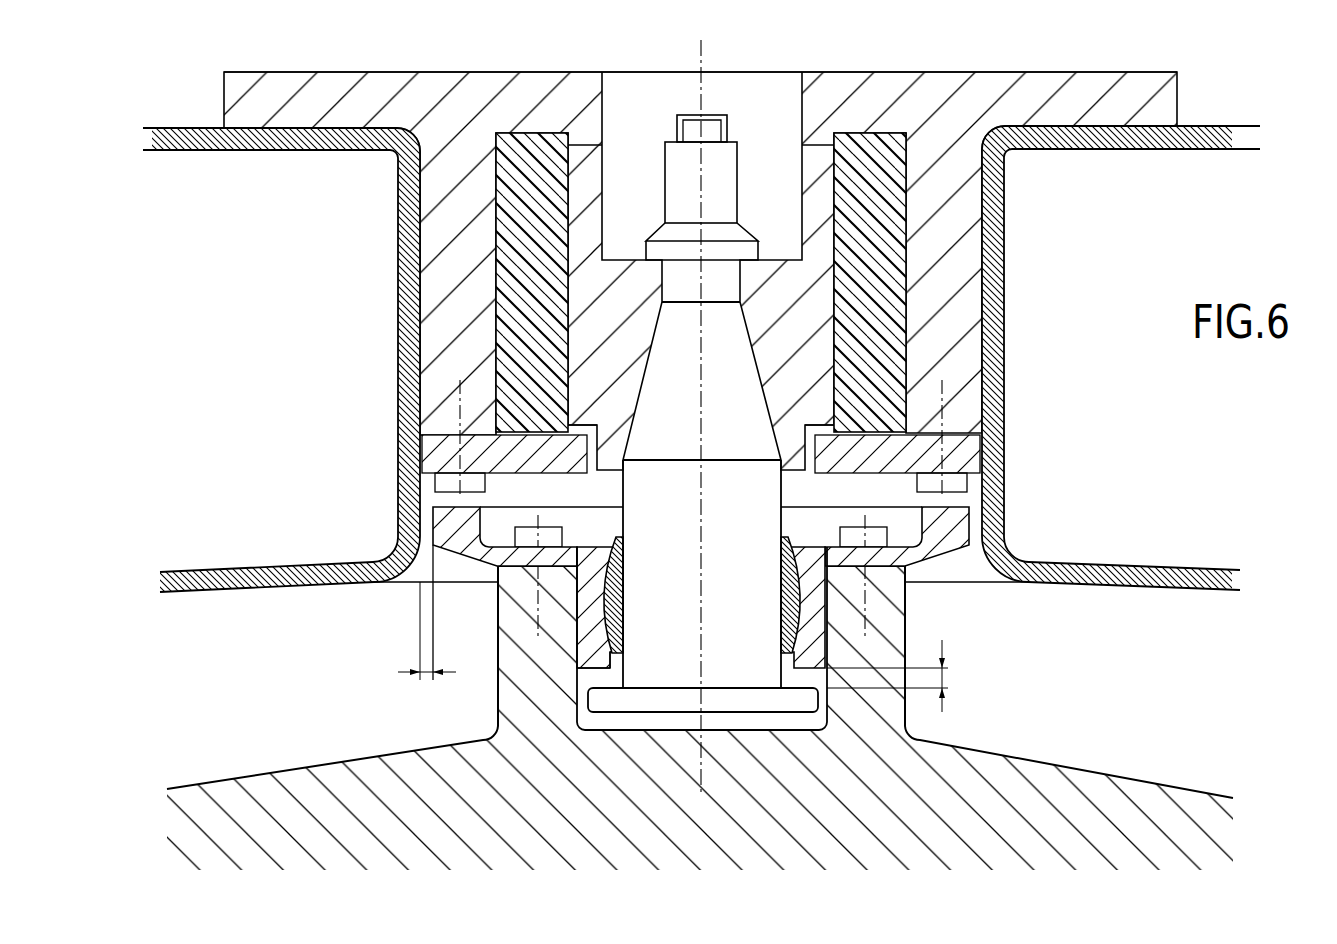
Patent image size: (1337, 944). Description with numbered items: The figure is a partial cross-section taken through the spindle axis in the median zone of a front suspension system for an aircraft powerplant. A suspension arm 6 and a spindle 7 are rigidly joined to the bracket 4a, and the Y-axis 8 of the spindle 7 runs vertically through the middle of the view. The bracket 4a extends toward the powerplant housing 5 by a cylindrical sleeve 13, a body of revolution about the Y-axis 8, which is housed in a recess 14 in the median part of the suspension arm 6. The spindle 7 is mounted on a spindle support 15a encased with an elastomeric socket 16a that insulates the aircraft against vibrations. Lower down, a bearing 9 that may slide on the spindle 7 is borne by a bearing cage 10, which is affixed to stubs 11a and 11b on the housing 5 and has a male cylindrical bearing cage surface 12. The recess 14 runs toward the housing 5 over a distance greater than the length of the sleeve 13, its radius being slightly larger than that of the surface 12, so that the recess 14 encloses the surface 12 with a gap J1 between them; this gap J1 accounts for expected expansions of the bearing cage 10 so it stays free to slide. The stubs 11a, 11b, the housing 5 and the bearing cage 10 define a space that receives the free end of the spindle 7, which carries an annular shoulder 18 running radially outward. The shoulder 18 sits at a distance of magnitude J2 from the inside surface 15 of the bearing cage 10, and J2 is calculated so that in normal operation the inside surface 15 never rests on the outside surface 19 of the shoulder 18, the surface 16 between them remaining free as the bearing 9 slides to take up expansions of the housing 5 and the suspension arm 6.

The bracket 4a is at (835, 97).
The powerplant housing 5 is at (294, 797).
The suspension arm 6 is at (270, 570).
The spindle 7 is at (755, 497).
The Y-axis 8 is at (702, 78).
The bearing 9 is at (625, 582).
The bearing cage 10 is at (627, 597).
The stub 11a is at (515, 632).
The stub 11b is at (870, 622).
The male cylindrical bearing cage surface 12 is at (985, 507).
The cylindrical sleeve 13 is at (440, 300).
The recess 14 is at (423, 523).
The inside surface 15 is at (807, 678).
The spindle support 15a is at (588, 182).
The cup 16 is at (755, 718).
The elastomeric socket 16a is at (541, 147).
The annular shoulder 18 is at (690, 697).
The outside surface 19 is at (603, 687).
The gap J1 is at (427, 647).
The magnitude J2 is at (900, 676).